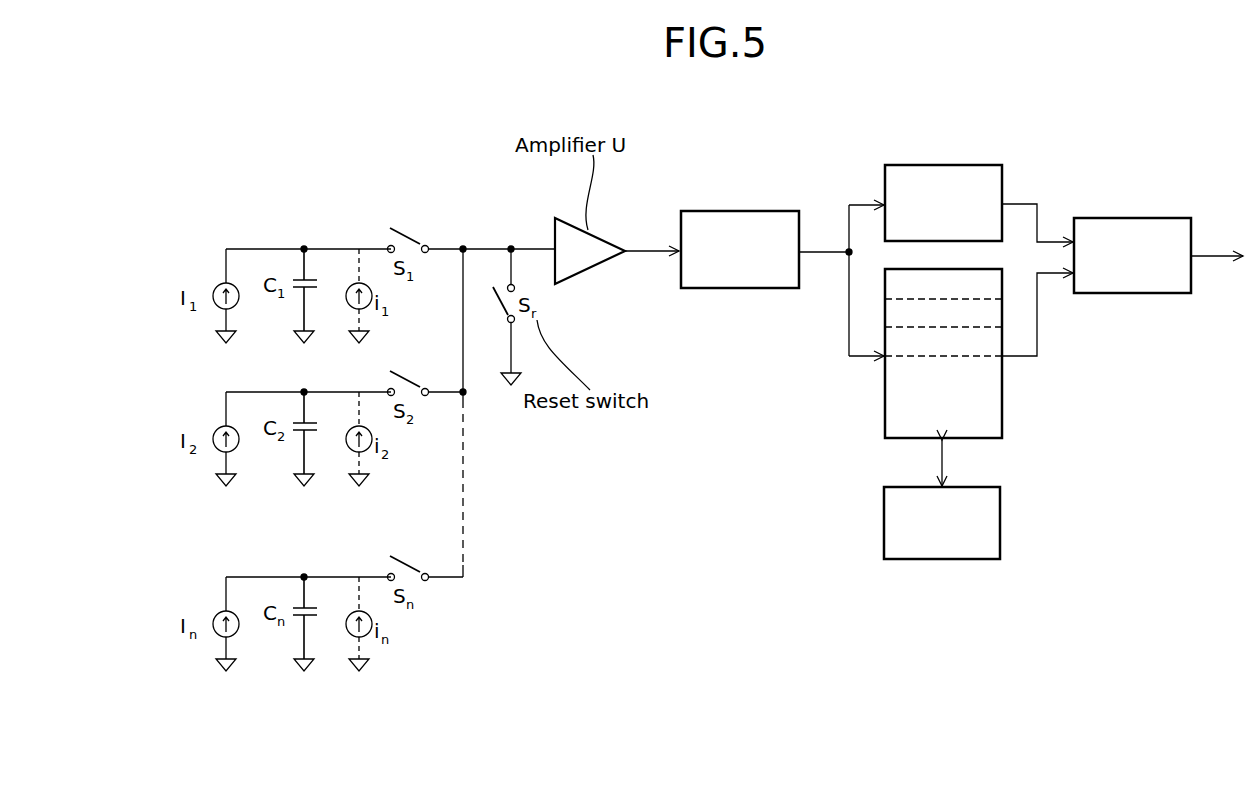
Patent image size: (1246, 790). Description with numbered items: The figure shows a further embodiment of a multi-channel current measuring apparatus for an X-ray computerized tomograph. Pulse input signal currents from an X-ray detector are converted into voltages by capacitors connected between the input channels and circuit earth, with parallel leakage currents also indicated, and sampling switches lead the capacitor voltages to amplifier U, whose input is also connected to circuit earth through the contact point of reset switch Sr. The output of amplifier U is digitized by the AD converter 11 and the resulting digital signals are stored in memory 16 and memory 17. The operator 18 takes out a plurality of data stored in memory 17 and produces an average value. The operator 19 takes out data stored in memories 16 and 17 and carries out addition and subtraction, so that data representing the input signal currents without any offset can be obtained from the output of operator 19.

The AD converter 11 is at (752, 288).
The memory 16 is at (942, 165).
The memory 17 is at (883, 397).
The operator 18 is at (883, 523).
The operator 19 is at (1138, 218).